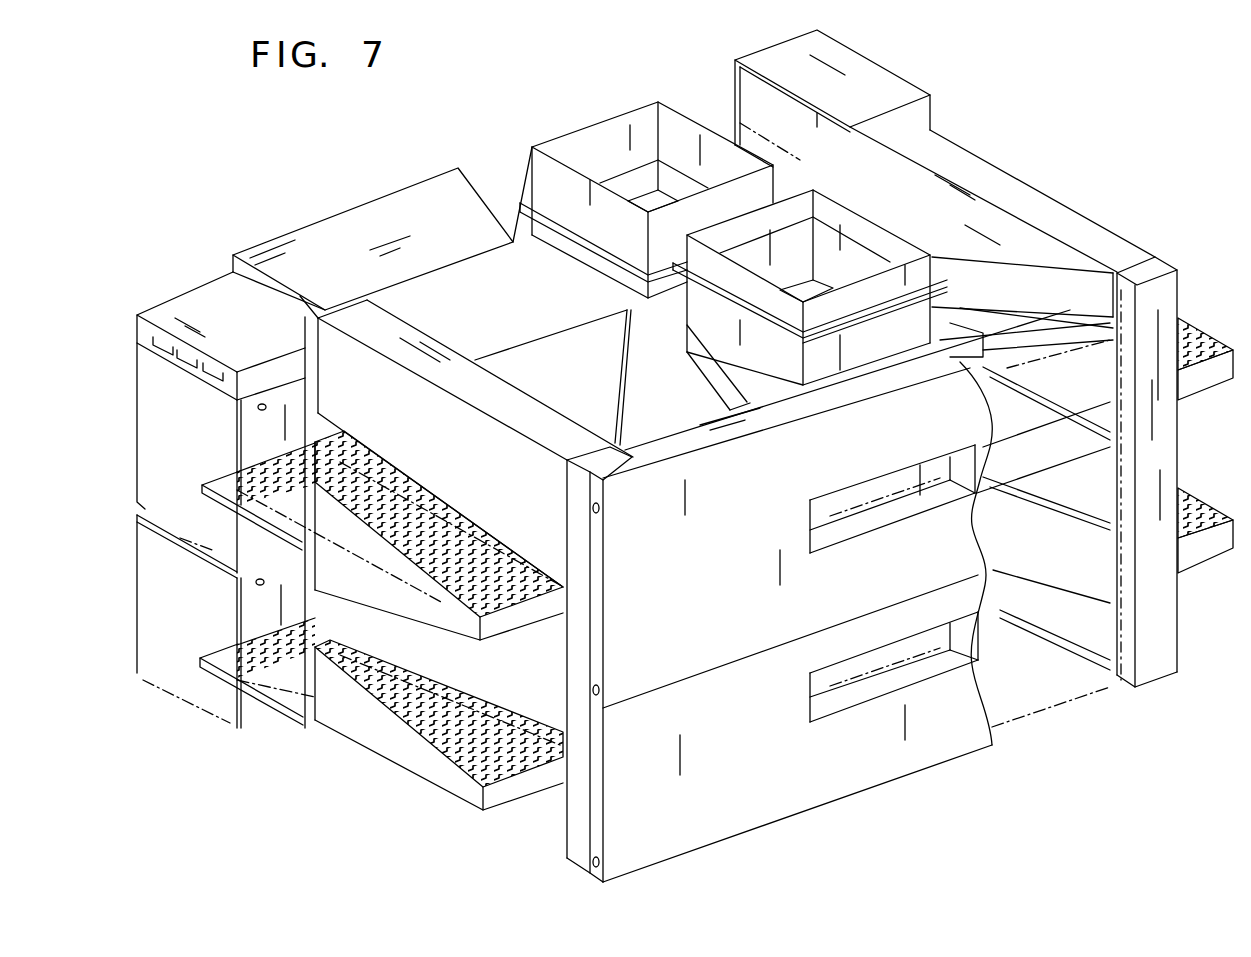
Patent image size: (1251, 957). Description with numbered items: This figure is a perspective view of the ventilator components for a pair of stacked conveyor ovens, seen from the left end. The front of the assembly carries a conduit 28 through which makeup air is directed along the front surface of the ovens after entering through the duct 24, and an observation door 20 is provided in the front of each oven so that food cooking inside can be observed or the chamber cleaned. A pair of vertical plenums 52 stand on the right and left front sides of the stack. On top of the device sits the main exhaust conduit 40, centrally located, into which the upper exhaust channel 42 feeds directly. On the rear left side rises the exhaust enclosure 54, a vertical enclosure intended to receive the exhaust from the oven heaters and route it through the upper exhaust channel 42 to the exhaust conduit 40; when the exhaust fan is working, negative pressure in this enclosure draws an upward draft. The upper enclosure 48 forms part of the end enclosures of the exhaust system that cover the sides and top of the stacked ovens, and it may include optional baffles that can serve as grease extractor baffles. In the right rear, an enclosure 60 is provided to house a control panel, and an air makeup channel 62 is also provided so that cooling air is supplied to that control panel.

The observation door 20 is at (810, 510).
The duct 24 is at (890, 230).
The conduit 28 is at (679, 599).
The exhaust conduit 40 is at (632, 107).
The upper exhaust channel 42 is at (350, 218).
The upper enclosure 48 is at (399, 406).
The vertical plenums 52 is at (567, 463).
The exhaust enclosure 54 is at (835, 53).
The enclosure 60 is at (164, 288).
The air makeup channel 62 is at (249, 334).